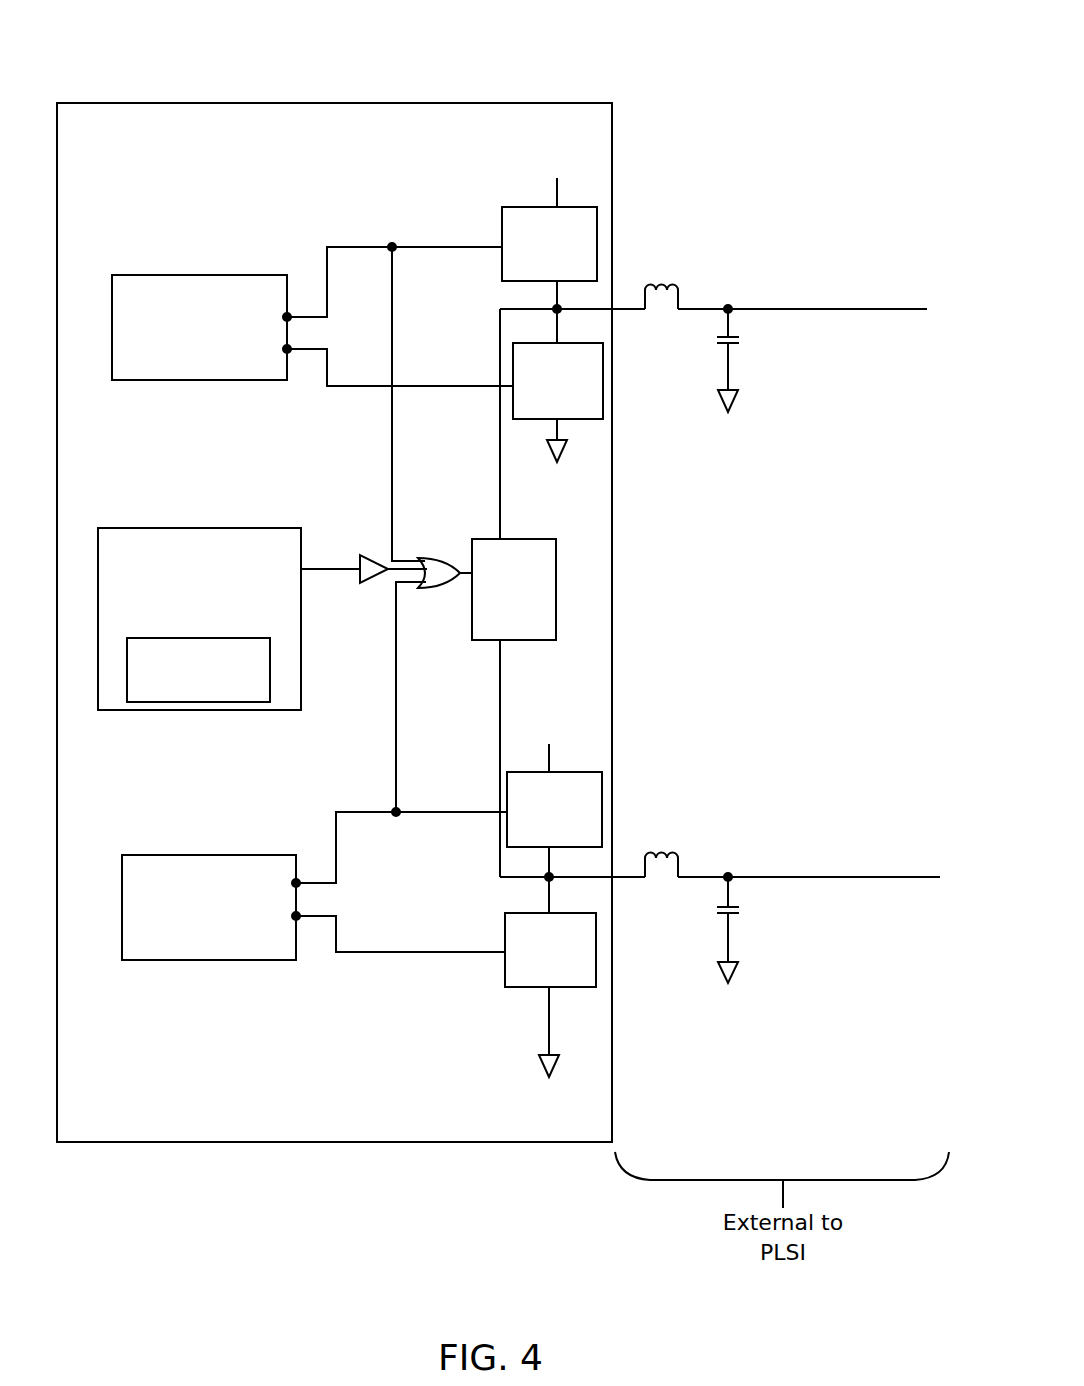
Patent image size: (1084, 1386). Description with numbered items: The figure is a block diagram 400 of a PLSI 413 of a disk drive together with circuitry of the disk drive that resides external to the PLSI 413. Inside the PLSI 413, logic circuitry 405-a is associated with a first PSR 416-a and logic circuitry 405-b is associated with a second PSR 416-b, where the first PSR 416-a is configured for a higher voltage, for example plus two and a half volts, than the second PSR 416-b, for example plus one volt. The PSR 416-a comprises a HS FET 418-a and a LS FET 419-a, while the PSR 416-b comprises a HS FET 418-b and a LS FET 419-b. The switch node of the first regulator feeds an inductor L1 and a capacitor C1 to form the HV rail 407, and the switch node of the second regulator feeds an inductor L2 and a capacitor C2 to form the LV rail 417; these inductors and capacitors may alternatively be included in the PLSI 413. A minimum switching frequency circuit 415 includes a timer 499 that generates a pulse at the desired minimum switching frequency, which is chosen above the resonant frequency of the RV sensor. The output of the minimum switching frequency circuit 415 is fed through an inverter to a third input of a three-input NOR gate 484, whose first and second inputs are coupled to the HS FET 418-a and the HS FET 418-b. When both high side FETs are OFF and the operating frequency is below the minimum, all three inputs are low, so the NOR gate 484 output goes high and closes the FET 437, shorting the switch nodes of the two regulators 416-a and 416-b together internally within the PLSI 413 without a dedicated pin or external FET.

The block diagram 400 is at (840, 30).
The PLSI 413 is at (334, 622).
The logic circuitry 405-a is at (201, 327).
The logic circuitry 405-b is at (211, 907).
The first PSR 416-a is at (468, 295).
The second PSR 416-b is at (452, 897).
The HS FET 418-a is at (549, 244).
The HS FET 418-b is at (554, 809).
The LS FET 419-a is at (558, 381).
The LS FET 419-b is at (550, 950).
The NOR logic gate 484 is at (414, 540).
The FET 437 is at (514, 589).
The minimum switching frequency circuit 415 is at (199, 619).
The timer 499 is at (198, 670).
The HV rail 407 is at (837, 309).
The LV rail 417 is at (855, 877).
The inductor L1 is at (661, 281).
The inductor L2 is at (661, 849).
The capacitor C1 is at (708, 358).
The capacitor C2 is at (708, 928).